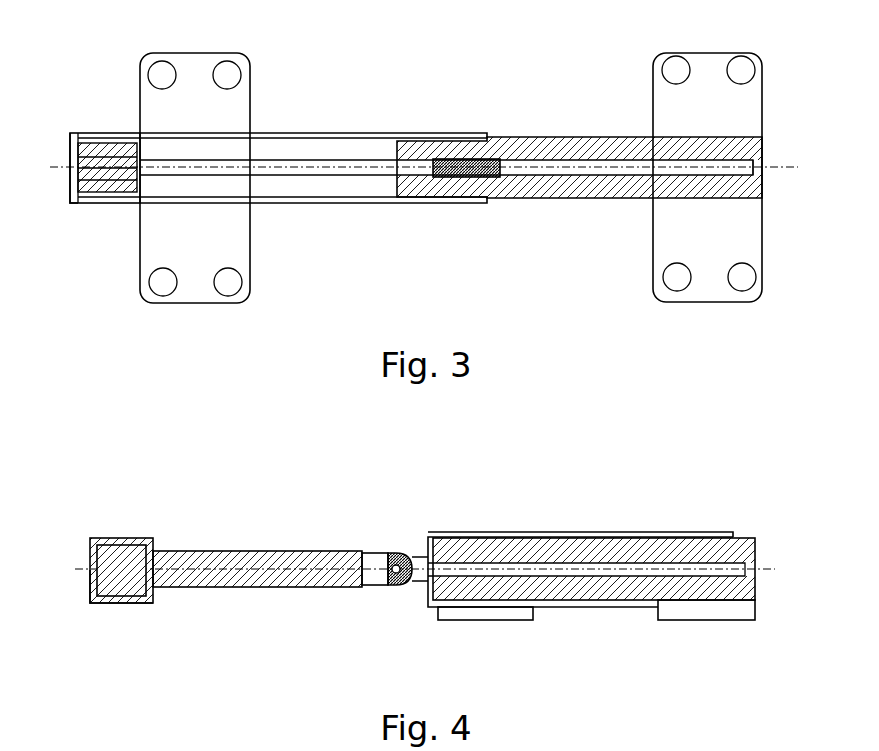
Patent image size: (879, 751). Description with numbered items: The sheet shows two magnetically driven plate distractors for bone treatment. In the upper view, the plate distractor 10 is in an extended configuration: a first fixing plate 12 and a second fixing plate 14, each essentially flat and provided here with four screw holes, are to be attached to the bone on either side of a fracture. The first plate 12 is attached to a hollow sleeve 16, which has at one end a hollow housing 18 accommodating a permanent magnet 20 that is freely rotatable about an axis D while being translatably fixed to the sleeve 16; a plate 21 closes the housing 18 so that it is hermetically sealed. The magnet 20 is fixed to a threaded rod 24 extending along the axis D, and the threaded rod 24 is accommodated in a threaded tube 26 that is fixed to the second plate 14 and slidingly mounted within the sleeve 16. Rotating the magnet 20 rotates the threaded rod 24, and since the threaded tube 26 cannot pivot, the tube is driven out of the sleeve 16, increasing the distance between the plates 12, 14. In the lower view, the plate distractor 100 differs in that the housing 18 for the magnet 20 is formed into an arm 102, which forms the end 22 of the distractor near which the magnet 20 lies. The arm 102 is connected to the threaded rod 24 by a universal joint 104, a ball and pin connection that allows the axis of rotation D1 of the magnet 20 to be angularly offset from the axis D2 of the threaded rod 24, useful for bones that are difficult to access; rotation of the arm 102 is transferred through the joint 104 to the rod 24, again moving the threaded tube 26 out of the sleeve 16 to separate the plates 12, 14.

In FIG. 3, the plate distractor 10 is at (420, 88).
In FIG. 3, the first fixing plate 12 is at (197, 290).
In FIG. 4, the first fixing plate 12 is at (473, 613).
In FIG. 3, the second fixing plate 14 is at (705, 283).
In FIG. 4, the second fixing plate 14 is at (705, 613).
In FIG. 3, the sleeve 16 is at (312, 205).
In FIG. 4, the sleeve 16 is at (545, 603).
In FIG. 3, the hollow housing 18 is at (108, 147).
In FIG. 4, the hollow housing 18 is at (110, 558).
In FIG. 3, the permanent magnet 20 is at (92, 196).
In FIG. 4, the permanent magnet 20 is at (130, 558).
In FIG. 3, the plate 21 is at (71, 200).
In FIG. 3, the threaded rod 24 is at (320, 160).
In FIG. 4, the threaded rod 24 is at (538, 567).
In FIG. 3, the threaded tube 26 is at (547, 200).
In FIG. 4, the threaded tube 26 is at (627, 552).
In FIG. 3, the axis of rotation D is at (460, 203).
In FIG. 4, the plate distractor 100 is at (293, 507).
In FIG. 4, the arm 102 is at (228, 562).
In FIG. 4, the universal joint 104 is at (393, 555).
In FIG. 4, the end of the plate distractor 22 is at (90, 594).
In FIG. 4, the axis of rotation of the magnet D1 is at (377, 579).
In FIG. 4, the axis of the threaded rod D2 is at (425, 557).